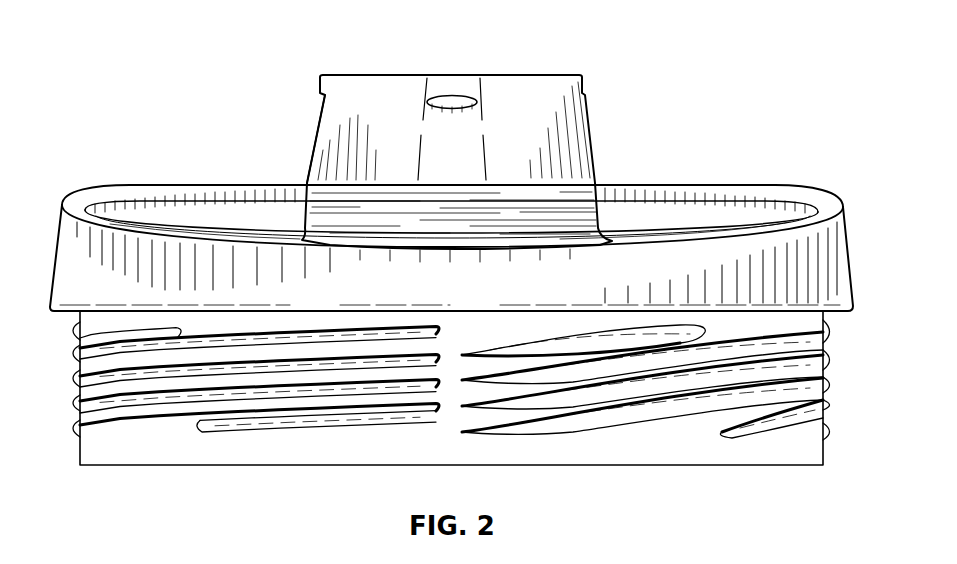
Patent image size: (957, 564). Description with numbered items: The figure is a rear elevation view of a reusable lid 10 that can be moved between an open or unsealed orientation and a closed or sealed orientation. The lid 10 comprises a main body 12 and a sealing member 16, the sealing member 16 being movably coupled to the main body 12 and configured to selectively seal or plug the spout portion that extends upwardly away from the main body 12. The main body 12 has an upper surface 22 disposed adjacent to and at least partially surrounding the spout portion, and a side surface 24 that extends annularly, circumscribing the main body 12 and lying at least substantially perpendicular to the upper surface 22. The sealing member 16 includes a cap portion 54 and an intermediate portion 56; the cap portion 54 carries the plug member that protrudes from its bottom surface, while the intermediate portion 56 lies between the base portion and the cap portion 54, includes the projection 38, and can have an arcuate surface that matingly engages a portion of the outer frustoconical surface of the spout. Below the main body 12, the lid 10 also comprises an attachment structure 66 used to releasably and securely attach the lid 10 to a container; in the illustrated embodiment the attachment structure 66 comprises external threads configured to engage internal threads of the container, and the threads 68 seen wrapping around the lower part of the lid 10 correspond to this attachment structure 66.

The lid 10 is at (258, 33).
The main body 12 is at (249, 208).
The sealing member 16 is at (398, 90).
The upper surface 22 is at (178, 178).
The side surface 24 is at (78, 285).
The projection 38 is at (452, 97).
The cap portion 54 is at (561, 61).
The intermediate portion 56 is at (330, 118).
The attachment structure 66 is at (800, 452).
The threads 68 is at (826, 350).